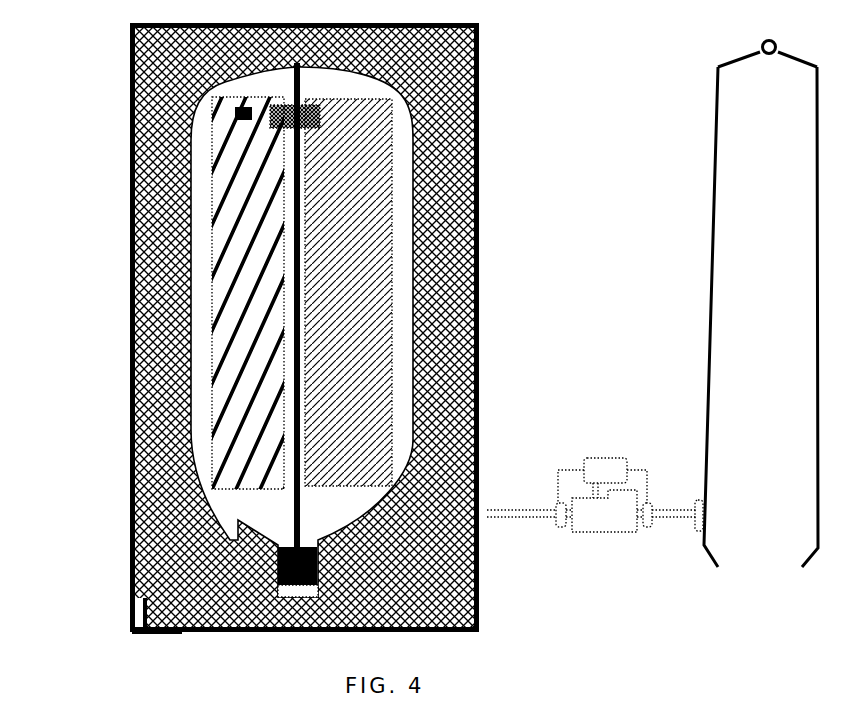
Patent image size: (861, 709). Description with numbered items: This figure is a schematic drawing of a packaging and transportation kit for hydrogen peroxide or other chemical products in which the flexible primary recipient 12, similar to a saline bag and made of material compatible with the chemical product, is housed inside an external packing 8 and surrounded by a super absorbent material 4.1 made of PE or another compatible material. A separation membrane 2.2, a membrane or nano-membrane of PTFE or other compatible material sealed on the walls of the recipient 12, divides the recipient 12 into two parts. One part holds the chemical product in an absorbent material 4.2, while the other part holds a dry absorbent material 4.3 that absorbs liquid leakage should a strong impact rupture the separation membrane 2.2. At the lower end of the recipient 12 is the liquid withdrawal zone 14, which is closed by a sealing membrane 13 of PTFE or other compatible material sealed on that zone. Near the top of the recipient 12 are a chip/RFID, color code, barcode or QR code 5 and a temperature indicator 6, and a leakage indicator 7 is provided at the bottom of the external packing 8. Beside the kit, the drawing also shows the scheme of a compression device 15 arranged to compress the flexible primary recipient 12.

The super absorbent material 4.1 is at (157, 60).
The temperature indicator 6 is at (234, 113).
The chip/RFID and/or color code, barcode or QR code 5 is at (269, 127).
The external packing 8 is at (130, 173).
The flexible primary recipient 12 is at (188, 380).
The absorbent material 4.2 is at (224, 422).
The dry absorbent material 4.3 is at (319, 458).
The separation membrane 2.2 is at (291, 502).
The sealing membrane 13 is at (278, 566).
The liquid withdrawal zone 14 is at (276, 587).
The leakage indicator 7 is at (132, 631).
The compression device 15 is at (692, 542).